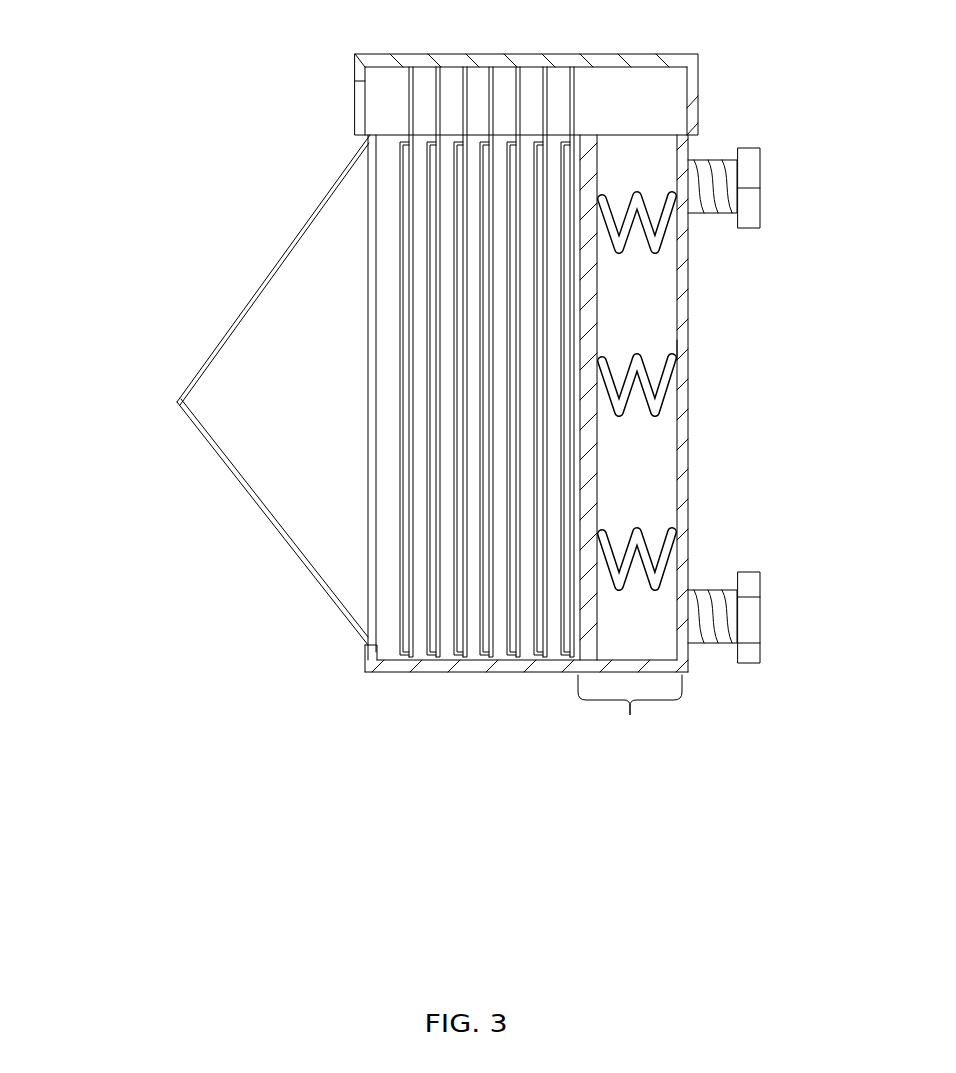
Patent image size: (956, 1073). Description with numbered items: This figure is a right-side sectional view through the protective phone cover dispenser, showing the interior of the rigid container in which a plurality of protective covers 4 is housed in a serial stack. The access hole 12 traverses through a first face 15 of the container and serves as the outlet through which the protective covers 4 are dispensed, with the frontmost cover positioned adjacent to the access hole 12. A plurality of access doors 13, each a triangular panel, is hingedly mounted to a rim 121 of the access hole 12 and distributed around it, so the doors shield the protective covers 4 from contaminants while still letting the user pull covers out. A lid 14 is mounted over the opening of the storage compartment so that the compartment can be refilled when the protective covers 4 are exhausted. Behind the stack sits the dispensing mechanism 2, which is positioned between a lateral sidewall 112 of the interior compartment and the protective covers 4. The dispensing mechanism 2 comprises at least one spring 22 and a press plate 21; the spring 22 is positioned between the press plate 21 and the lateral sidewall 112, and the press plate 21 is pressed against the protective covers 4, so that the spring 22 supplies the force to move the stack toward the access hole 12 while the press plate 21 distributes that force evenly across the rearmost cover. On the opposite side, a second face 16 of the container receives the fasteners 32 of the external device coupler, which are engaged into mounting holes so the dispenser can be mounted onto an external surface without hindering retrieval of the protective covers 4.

The dispensing mechanism 2 is at (630, 714).
The protective covers 4 is at (403, 415).
The access hole 12 is at (489, 417).
The access doors 13 is at (263, 273).
The lid 14 is at (356, 70).
The first face 15 is at (360, 661).
The second face 16 is at (700, 305).
The press plate 21 is at (588, 142).
The spring 22 is at (604, 209).
The fasteners 32 is at (746, 151).
The lateral sidewall 112 is at (678, 348).
The rim 121 is at (373, 537).